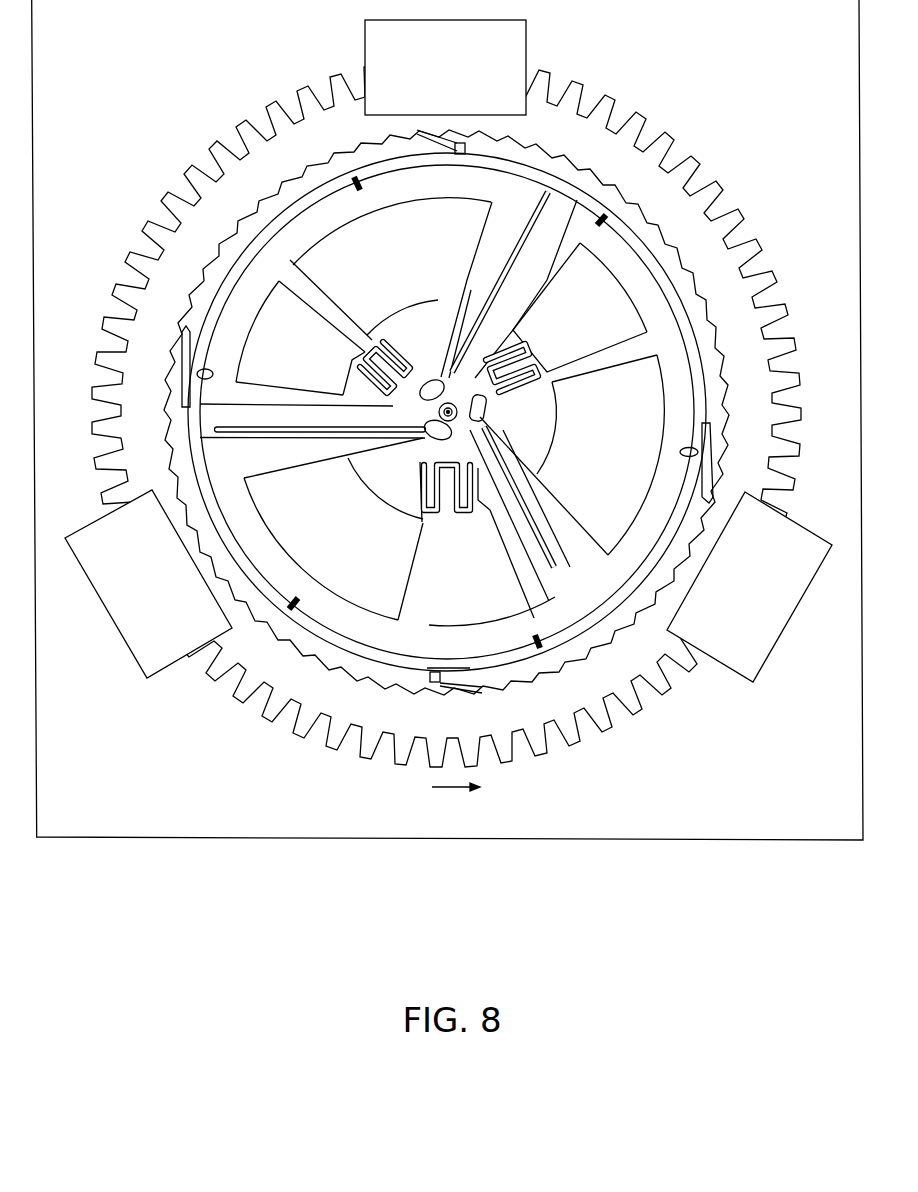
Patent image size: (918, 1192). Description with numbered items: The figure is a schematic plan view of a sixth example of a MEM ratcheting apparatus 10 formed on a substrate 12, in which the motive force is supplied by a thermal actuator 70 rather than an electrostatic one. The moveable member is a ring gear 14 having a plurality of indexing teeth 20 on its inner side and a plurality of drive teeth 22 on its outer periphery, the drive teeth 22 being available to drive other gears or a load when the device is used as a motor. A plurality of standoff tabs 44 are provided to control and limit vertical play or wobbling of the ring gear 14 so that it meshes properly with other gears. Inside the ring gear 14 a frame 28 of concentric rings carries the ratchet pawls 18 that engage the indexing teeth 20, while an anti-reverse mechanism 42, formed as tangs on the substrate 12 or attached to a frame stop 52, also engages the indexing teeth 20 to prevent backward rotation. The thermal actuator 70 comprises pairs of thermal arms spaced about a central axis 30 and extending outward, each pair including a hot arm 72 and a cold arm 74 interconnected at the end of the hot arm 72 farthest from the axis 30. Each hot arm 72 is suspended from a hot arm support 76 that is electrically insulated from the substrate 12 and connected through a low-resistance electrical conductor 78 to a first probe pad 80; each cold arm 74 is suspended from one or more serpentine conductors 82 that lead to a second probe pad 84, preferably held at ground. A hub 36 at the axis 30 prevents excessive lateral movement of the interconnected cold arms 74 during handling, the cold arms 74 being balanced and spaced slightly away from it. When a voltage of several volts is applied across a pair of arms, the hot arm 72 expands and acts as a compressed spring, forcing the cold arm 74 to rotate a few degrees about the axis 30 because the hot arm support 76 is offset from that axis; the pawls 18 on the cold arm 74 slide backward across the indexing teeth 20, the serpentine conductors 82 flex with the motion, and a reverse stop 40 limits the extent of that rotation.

The MEM ratcheting apparatus 10 is at (583, 877).
The substrate 12 is at (87, 802).
The ring gear 14 is at (439, 727).
The ratchet pawl 18 is at (180, 347).
The indexing teeth 20 is at (343, 673).
The drive teeth 22 is at (605, 722).
The frame 28 is at (222, 268).
The central axis 30 is at (485, 412).
The hub 36 is at (443, 405).
The reverse stop 40 is at (214, 373).
The anti-reverse mechanism 42 is at (458, 668).
The standoff tab 44 is at (432, 74).
The frame stop 52 is at (437, 667).
The thermal actuator 70 is at (255, 448).
The hot arm 72 is at (270, 438).
The cold arm 74 is at (273, 405).
The hot arm support 76 is at (425, 438).
The low-resistance electrical conductor 78 is at (378, 485).
The first probe pad 80 is at (317, 552).
The serpentine conductor 82 is at (378, 347).
The second probe pad 84 is at (272, 334).